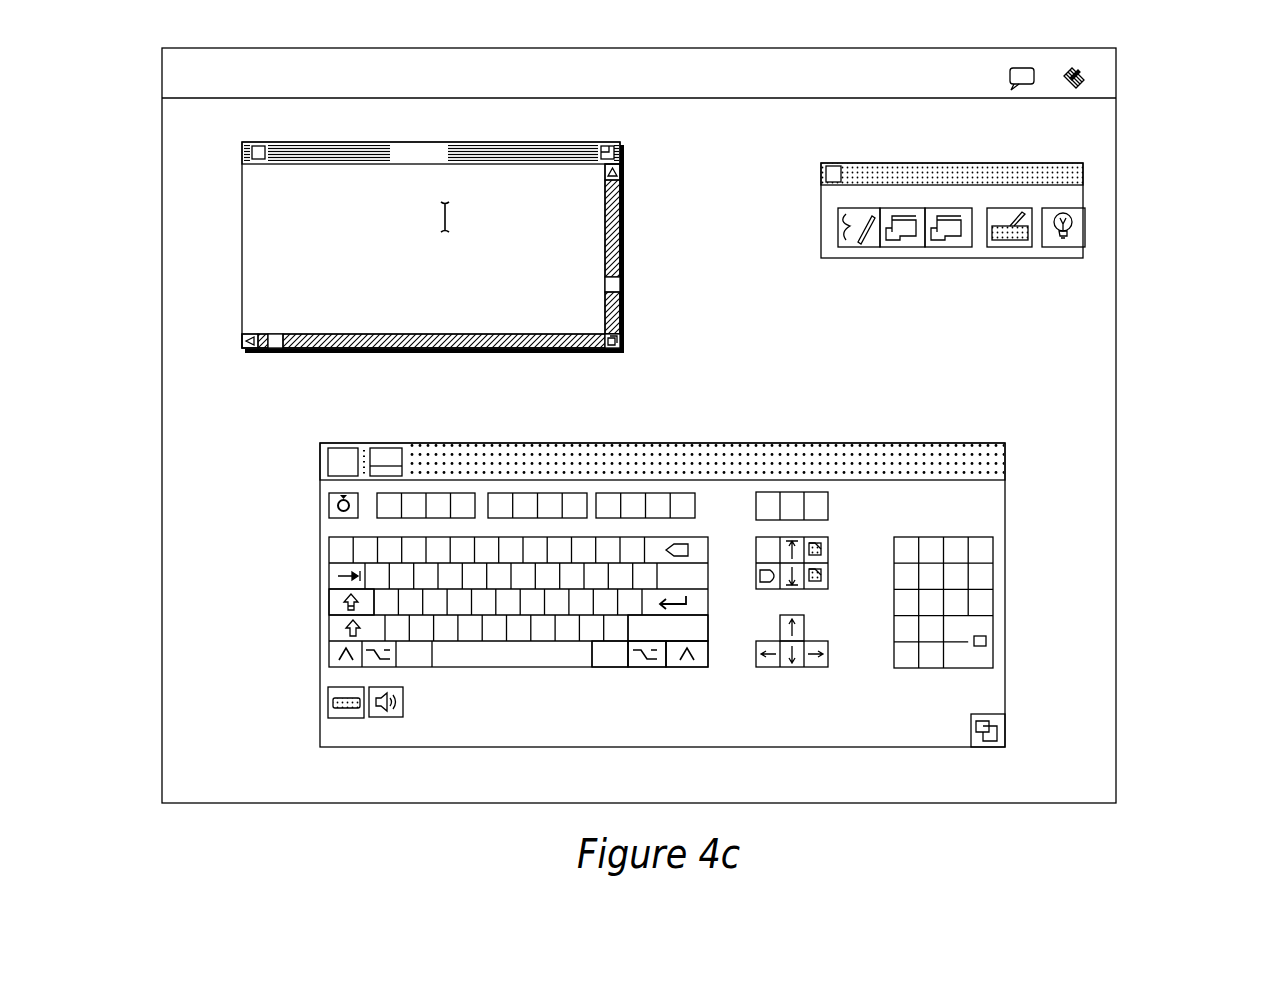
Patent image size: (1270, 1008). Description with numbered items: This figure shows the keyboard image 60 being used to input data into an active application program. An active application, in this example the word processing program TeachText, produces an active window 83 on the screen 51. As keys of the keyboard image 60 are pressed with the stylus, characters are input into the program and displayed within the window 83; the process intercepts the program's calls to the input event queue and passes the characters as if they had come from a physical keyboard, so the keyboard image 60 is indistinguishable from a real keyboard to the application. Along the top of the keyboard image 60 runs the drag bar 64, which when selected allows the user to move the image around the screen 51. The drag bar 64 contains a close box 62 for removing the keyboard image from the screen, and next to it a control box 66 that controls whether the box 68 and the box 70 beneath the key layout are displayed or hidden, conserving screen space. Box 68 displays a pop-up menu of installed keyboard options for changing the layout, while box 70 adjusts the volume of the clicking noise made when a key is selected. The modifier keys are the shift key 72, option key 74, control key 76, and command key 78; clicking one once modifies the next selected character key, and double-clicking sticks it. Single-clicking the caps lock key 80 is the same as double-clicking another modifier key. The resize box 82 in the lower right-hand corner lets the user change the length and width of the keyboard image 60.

The screen 51 is at (1158, 124).
The keyboard image 60 is at (674, 576).
The close box 62 is at (338, 446).
The drag bar 64 is at (518, 444).
The control box 66 is at (384, 447).
The box 68 is at (337, 718).
The box 70 is at (398, 719).
The shift key 72 is at (706, 628).
The option key 74 is at (706, 655).
The control key 76 is at (657, 668).
The command key 78 is at (617, 668).
The caps lock key 80 is at (332, 602).
The resize box 82 is at (1002, 719).
The active window 83 is at (630, 255).